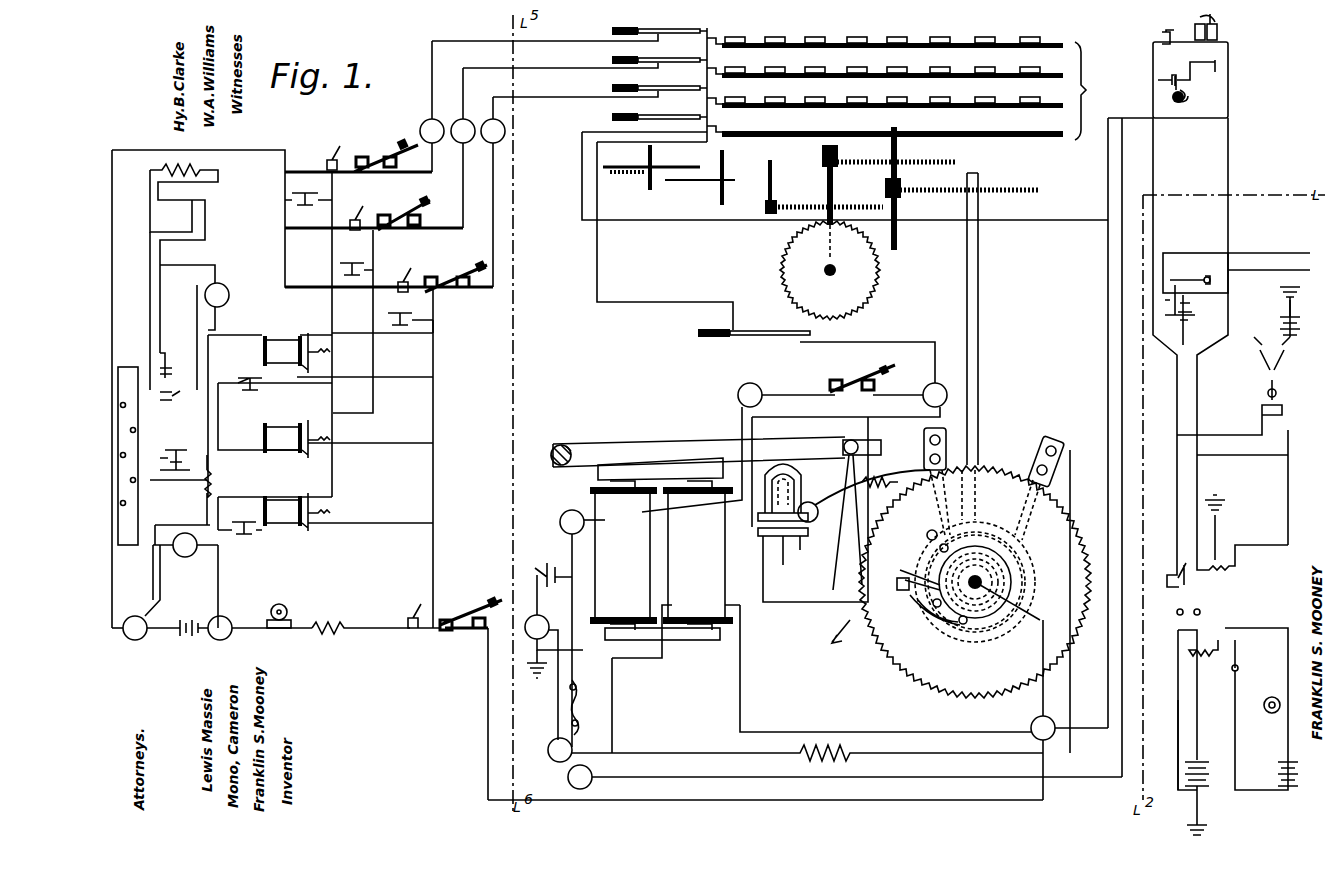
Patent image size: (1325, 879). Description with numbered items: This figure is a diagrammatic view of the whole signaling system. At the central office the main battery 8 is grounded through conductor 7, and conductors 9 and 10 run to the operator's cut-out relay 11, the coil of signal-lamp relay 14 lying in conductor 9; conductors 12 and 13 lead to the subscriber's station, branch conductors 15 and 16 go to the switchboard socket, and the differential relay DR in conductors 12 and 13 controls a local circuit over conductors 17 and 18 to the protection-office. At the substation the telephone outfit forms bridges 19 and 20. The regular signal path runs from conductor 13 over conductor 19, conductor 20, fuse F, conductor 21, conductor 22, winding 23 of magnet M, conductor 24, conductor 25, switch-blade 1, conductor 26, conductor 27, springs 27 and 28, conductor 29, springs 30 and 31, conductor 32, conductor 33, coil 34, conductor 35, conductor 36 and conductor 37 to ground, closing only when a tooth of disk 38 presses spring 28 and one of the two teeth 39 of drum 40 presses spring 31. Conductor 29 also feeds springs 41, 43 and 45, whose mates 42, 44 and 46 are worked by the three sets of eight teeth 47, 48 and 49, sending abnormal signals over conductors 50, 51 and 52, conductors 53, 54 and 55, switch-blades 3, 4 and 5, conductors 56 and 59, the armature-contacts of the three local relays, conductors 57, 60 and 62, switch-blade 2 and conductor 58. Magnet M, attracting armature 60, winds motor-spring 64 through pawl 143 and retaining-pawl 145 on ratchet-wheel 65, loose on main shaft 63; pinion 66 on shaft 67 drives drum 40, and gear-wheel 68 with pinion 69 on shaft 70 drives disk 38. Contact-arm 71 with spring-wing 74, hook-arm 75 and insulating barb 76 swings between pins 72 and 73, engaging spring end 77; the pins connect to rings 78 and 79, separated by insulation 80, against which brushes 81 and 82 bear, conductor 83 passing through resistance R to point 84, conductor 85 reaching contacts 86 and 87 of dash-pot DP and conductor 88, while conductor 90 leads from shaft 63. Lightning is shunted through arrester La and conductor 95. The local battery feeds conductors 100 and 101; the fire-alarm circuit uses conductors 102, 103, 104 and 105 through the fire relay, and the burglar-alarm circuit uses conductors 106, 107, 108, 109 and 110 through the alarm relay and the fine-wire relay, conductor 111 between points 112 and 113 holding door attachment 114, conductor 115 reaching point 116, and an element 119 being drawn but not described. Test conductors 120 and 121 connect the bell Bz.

The switch-blade 1 is at (862, 373).
The switch-blade 2 is at (471, 610).
The switch-blade 3 is at (389, 272).
The switch-blade 4 is at (374, 211).
The switch-blade 5 is at (358, 153).
The conductor 7 is at (1200, 811).
The main battery 8 is at (1241, 786).
The conductor 9 is at (1168, 745).
The conductor 10 is at (1204, 705).
The operator's cut-out relay 11 is at (1227, 580).
The conductor 12 is at (1164, 341).
The conductor 13 is at (1224, 341).
The signal-lamp relay 14 is at (1233, 709).
The branch conductor 15 is at (1233, 367).
The branch conductor 16 is at (1242, 487).
The conductor 17 is at (1269, 244).
The conductor 18 is at (1269, 261).
The bridge 19 is at (1124, 447).
The bridge 20 is at (591, 740).
The conductor 21 is at (587, 667).
The conductor 22 is at (596, 531).
The winding of electromagnet M 23 is at (623, 555).
The conductor 24 is at (692, 459).
The conductor 25 is at (798, 385).
The conductor 26 is at (897, 385).
The spring 27 is at (841, 352).
The spring 28 is at (754, 324).
The conductor 29 is at (665, 236).
The spring 30 is at (695, 85).
The spring 31 is at (652, 133).
The conductor 32 is at (845, 430).
The conductor 33 is at (885, 668).
The coil of magnet M 34 is at (698, 555).
The conductor 35 is at (676, 679).
The conductor 36 is at (558, 695).
The conductor 37 is at (570, 648).
The rotary disk 38 is at (830, 270).
The teeth 39 is at (892, 182).
The rotary drum 40 is at (128, 440).
The spring 41 is at (674, 82).
The spring 42 is at (656, 108).
The spring 43 is at (674, 53).
The spring 44 is at (656, 78).
The spring 45 is at (656, 22).
The spring 46 is at (656, 50).
The teeth 47 is at (800, 102).
The teeth 48 is at (800, 72).
The teeth 49 is at (800, 42).
The conductor 50 is at (575, 106).
The conductor 51 is at (560, 76).
The conductor 52 is at (545, 47).
The conductor 53 is at (495, 240).
The conductor 54 is at (479, 200).
The conductor 55 is at (447, 167).
The conductor 56 is at (382, 344).
The conductor 57 is at (445, 398).
The conductor 58 is at (765, 809).
The conductor 59 is at (365, 366).
The conductor 60 is at (370, 453).
The conductor 62 is at (370, 533).
The main shaft 63 is at (1032, 463).
The motor-spring 64 is at (1001, 631).
The ratchet-wheel 65 is at (961, 582).
The pinion 66 is at (962, 194).
The shaft 67 is at (345, 315).
The gear-wheel 68 is at (910, 153).
The pinion 69 is at (844, 153).
The shaft 70 is at (845, 205).
The contact-arm 71 is at (917, 608).
The contact-pin 72 is at (928, 530).
The contact-pin 73 is at (937, 675).
The spring-wing 74 is at (917, 566).
The hook-arm 75 is at (924, 658).
The barb of insulation 76 is at (931, 634).
The projecting end of coiled spring 77 is at (908, 616).
The conducting-ring 78 is at (975, 572).
The conducting-ring 79 is at (989, 582).
The ring of insulation 80 is at (1005, 585).
The brush 81 is at (946, 450).
The brush 82 is at (1058, 445).
The conductor 83 is at (857, 768).
The point 84 is at (614, 765).
The conductor 85 is at (799, 615).
The contact of dash-pot 86 is at (739, 573).
The contact of dash-pot 87 is at (739, 555).
The conductor 88 is at (846, 467).
The conductor 90 is at (1014, 672).
The conductor 95 is at (546, 568).
The conductor 100 is at (177, 634).
The conductor 101 is at (191, 641).
The conductor 102 is at (125, 577).
The conductor 103 is at (240, 546).
The conductor 104 is at (275, 505).
The conductor 105 is at (235, 586).
The conductor 106 is at (166, 580).
The conductor 107 is at (275, 414).
The conductor 108 is at (276, 435).
The conductor 109 is at (270, 415).
The conductor 110 is at (198, 272).
The conductor 111 is at (179, 313).
The point 112 is at (178, 278).
The point 113 is at (178, 491).
The window or door attachment 114 is at (177, 360).
The conductor 115 is at (182, 337).
The point 116 is at (176, 443).
The wire 119 is at (181, 523).
The conductor 120 is at (131, 311).
The conductor 121 is at (249, 638).
The pawl 143 is at (841, 543).
The retaining-pawl 145 is at (880, 472).